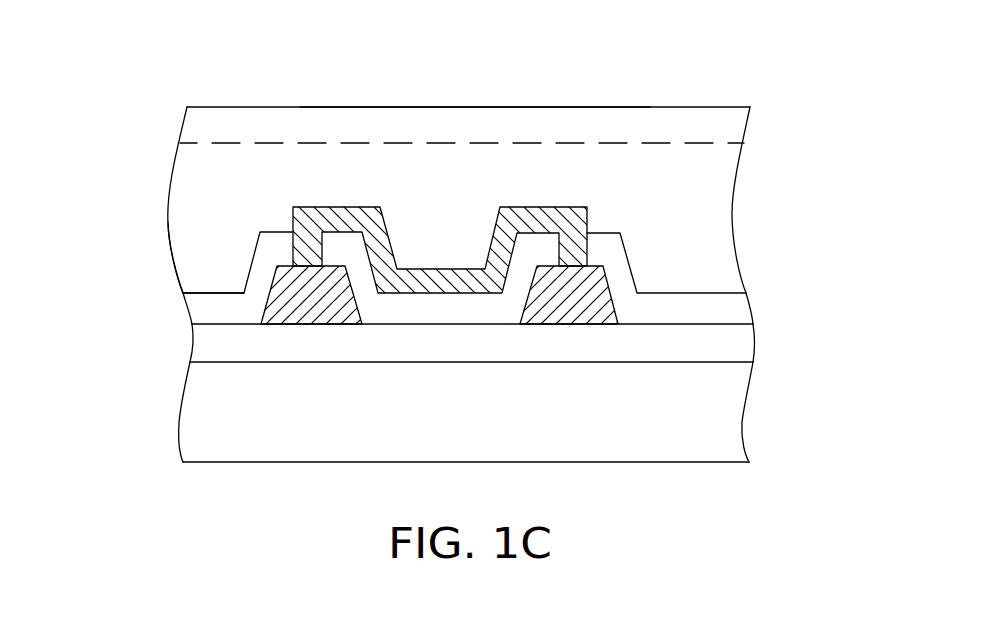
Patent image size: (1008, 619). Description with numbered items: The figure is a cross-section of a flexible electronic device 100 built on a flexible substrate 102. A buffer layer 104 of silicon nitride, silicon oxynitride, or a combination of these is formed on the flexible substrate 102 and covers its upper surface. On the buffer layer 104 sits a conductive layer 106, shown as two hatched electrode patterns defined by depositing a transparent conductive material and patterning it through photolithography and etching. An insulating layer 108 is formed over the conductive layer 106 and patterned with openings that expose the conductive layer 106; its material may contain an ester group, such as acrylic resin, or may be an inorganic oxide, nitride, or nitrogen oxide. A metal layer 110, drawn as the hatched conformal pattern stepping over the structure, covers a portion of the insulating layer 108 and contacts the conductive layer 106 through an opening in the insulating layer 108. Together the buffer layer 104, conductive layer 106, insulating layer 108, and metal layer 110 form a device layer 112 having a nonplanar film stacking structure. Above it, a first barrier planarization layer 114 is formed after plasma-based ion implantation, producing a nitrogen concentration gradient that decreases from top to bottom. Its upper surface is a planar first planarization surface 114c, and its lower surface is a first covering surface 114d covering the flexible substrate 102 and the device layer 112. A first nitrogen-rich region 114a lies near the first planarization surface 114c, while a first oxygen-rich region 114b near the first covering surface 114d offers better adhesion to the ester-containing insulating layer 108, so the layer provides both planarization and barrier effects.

The flexible electronic device 100 is at (138, 60).
The flexible substrate 102 is at (730, 398).
The buffer layer 104 is at (732, 345).
The conductive layer 106 is at (582, 305).
The insulating layer 108 is at (540, 251).
The metal layer 110 is at (575, 217).
The device layer 112 is at (824, 225).
The first barrier planarization layer 114 is at (92, 113).
The first nitrogen-rich region 114a is at (199, 128).
The first oxygen-rich region 114b is at (202, 183).
The first planarization surface 114c is at (250, 107).
The first covering surface 114d is at (210, 292).